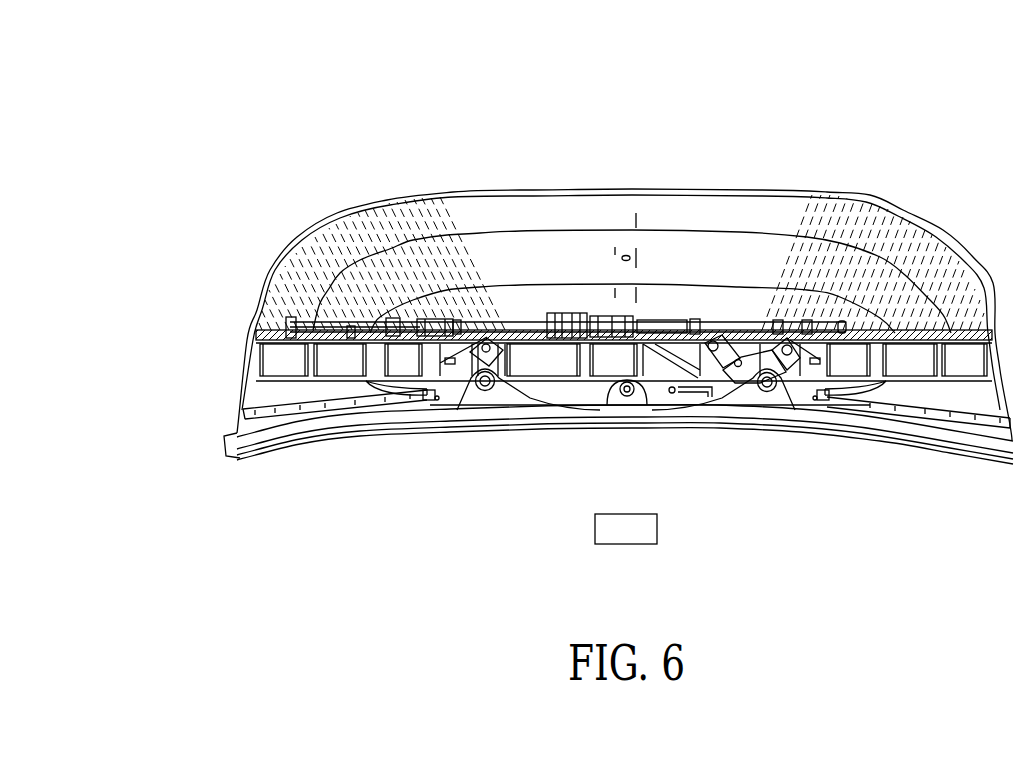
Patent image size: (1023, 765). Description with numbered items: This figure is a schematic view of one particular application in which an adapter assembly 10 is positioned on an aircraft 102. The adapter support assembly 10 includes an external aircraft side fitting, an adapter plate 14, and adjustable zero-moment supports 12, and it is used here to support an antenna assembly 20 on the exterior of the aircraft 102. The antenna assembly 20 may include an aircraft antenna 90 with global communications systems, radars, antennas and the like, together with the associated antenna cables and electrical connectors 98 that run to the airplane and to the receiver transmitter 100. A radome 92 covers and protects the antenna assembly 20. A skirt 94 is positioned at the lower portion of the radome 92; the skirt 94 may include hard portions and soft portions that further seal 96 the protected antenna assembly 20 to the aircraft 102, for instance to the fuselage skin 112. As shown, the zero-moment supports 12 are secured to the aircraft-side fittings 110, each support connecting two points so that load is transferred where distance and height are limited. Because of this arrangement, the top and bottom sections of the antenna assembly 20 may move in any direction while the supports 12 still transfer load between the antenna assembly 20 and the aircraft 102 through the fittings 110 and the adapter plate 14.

The adapter support assembly 10 is at (315, 88).
The adjustable zero-moment support 12 is at (485, 372).
The adapter plate 14 is at (900, 373).
The antenna assembly 20 is at (637, 190).
The aircraft antenna 90 is at (573, 312).
The radome 92 is at (768, 190).
The skirt 94 is at (240, 407).
The seal 96 is at (237, 427).
The antenna cables/electrical connectors 98 is at (407, 397).
The receiver transmitter 100 is at (650, 528).
The aircraft 102 is at (645, 492).
The aircraft-side fitting 110 is at (482, 397).
The fuselage skin 112 is at (498, 408).